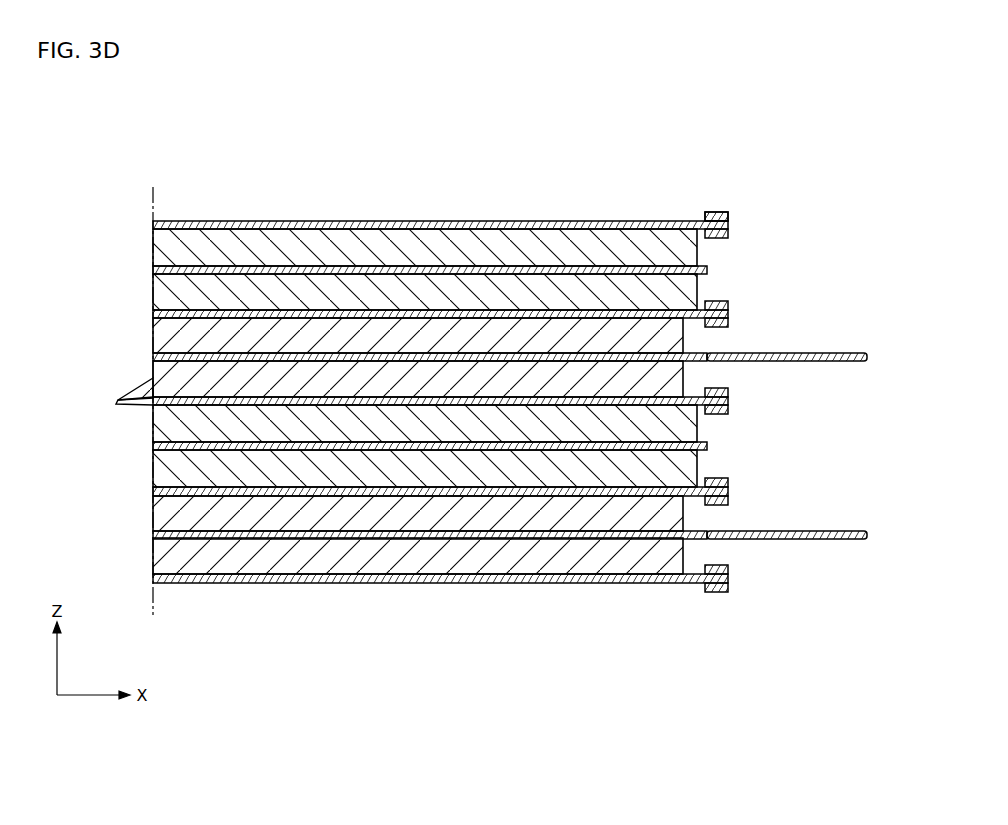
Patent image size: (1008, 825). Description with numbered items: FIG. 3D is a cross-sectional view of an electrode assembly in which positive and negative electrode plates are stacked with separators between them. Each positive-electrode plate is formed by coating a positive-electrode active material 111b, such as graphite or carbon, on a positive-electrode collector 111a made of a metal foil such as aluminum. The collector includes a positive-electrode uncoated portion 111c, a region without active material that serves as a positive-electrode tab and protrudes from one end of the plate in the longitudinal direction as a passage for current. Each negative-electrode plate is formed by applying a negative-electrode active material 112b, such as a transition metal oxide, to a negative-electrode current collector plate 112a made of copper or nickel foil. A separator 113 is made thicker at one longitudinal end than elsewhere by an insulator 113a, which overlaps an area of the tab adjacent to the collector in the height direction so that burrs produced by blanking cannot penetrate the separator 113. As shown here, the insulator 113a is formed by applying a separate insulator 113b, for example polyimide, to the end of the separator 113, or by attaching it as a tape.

The positive-electrode collector 111a is at (568, 530).
The positive-electrode active material 111b is at (343, 338).
The positive-electrode uncoated portion 111c is at (823, 355).
The negative-electrode current collector plate 112a is at (397, 445).
The negative-electrode active material 112b is at (280, 467).
The separator 113 is at (657, 313).
The insulator 113a is at (728, 217).
The separate insulator 113b is at (718, 212).